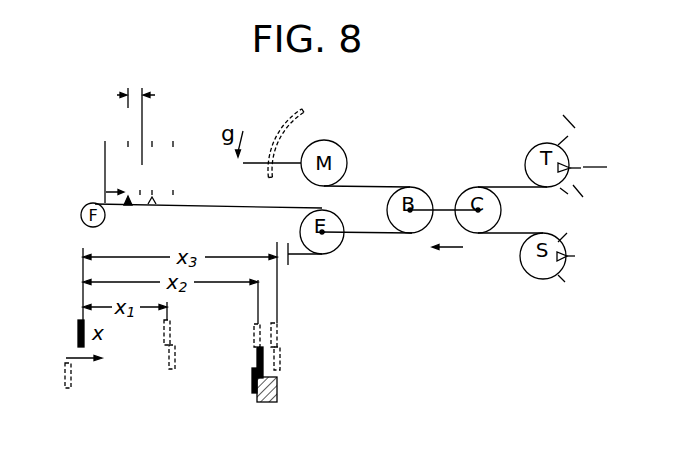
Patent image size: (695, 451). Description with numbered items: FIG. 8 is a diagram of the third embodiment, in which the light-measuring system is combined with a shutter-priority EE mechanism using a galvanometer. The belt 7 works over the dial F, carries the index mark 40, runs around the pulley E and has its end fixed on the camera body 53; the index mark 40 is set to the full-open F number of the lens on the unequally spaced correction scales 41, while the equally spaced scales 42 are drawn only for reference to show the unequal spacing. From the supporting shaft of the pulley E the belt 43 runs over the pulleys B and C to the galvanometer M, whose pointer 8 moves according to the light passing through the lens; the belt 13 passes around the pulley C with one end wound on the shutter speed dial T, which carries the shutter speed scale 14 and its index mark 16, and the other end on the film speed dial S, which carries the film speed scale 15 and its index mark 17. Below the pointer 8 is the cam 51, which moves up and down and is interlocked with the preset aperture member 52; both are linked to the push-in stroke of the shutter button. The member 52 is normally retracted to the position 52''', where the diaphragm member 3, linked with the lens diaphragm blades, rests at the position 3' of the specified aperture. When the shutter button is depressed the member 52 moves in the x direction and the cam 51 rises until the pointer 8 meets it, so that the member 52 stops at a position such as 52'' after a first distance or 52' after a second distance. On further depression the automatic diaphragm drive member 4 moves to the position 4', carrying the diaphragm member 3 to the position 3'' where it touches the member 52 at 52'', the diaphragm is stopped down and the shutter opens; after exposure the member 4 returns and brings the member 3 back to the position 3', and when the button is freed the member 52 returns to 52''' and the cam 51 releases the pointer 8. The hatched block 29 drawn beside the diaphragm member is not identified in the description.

The diaphragm member 3 is at (295, 356).
The position of diaphragm member at specified aperture value 3' is at (282, 372).
The stopped-down position of diaphragm member 3'' is at (189, 361).
The automatic diaphragm drive member 4 is at (233, 383).
The actuated position of automatic diaphragm drive member 4' is at (88, 390).
The belt 7 is at (250, 206).
The galvanometer pointer 8 is at (291, 161).
The belt 13 is at (500, 186).
The shutter speed scale 14 is at (561, 127).
The film speed scale 15 is at (563, 293).
The index mark for shutter speed scale 16 is at (569, 162).
The index mark for film speed scale 17 is at (568, 246).
The block 29 is at (278, 396).
The index mark 40 is at (124, 205).
The correction scales 41 is at (178, 195).
The equally spaced scales 42 is at (177, 144).
The belt 43 is at (376, 186).
The cam 51 is at (301, 109).
The preset aperture member 52 is at (299, 328).
The position of preset aperture member after second travel 52' is at (229, 316).
The position of preset aperture member after first travel 52'' is at (146, 325).
The retracted position of preset aperture member 52''' is at (50, 333).
The camera body 53 is at (278, 250).